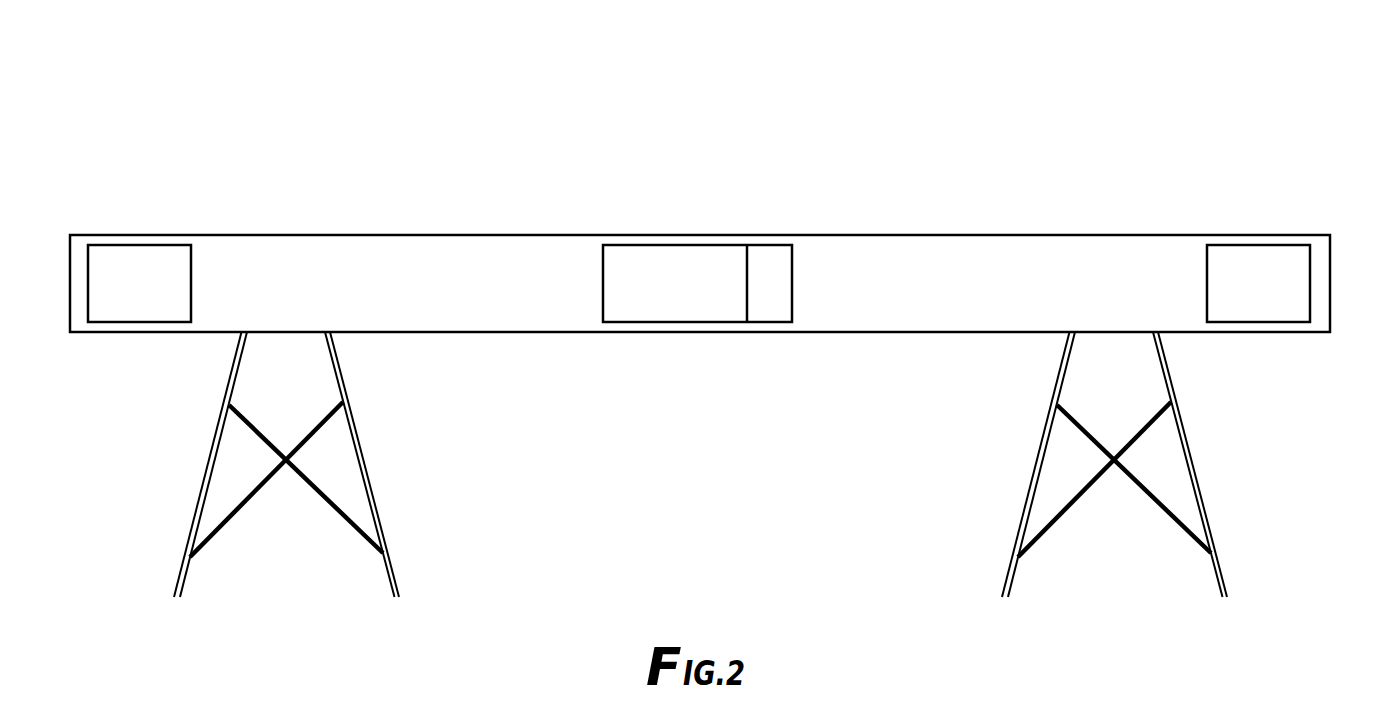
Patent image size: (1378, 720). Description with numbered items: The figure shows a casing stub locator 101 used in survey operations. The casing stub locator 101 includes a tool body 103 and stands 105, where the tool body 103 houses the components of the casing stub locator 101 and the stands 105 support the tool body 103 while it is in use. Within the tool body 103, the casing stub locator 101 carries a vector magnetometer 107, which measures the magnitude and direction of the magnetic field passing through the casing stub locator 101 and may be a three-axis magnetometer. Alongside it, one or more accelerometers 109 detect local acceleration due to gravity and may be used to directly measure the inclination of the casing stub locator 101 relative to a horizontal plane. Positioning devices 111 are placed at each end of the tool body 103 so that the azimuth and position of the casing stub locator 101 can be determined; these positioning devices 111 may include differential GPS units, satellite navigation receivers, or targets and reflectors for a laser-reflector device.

The casing stub locator 101 is at (224, 80).
The tool body 103 is at (989, 235).
The stands 105 is at (378, 507).
The vector magnetometer 107 is at (647, 322).
The accelerometers 109 is at (766, 322).
The positioning devices 111 is at (121, 245).